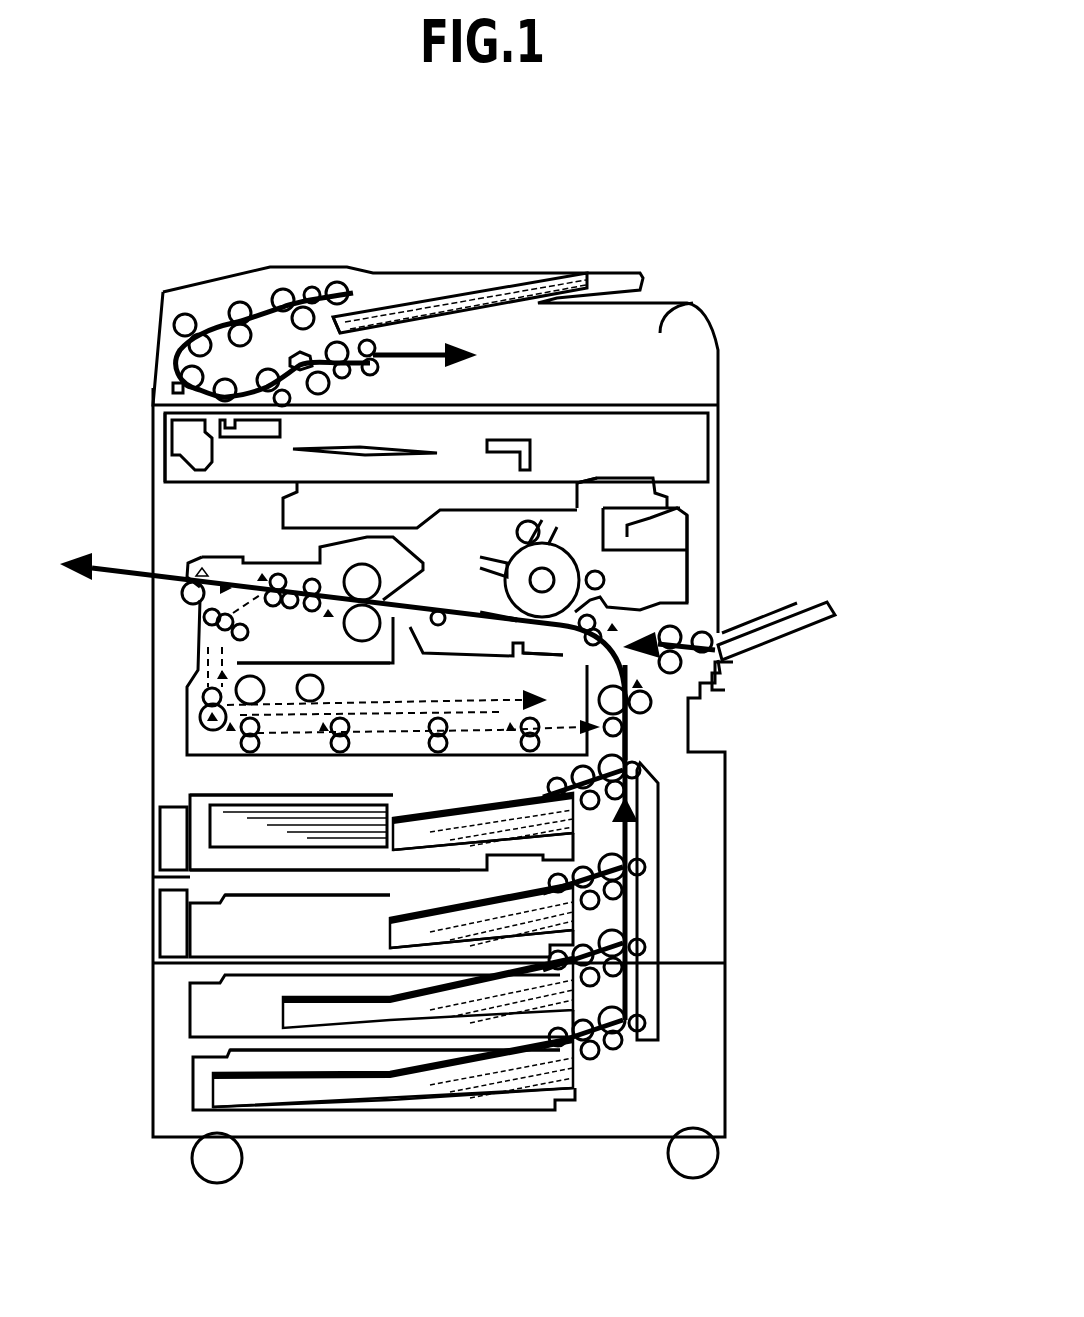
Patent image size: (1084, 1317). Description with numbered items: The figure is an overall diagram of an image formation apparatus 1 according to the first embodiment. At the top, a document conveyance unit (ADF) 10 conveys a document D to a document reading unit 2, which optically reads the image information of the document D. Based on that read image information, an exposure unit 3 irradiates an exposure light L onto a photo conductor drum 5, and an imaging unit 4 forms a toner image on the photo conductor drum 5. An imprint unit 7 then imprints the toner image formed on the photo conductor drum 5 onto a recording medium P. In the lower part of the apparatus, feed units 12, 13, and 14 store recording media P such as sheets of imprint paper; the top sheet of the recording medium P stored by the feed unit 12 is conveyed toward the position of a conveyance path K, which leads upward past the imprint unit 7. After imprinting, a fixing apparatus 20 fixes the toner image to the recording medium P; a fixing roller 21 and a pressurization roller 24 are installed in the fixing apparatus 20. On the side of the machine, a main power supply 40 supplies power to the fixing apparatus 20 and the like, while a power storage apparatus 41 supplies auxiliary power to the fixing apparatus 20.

The image formation apparatus 1 is at (887, 530).
The document reading unit 2 is at (173, 455).
The exposure unit 3 is at (623, 493).
The imaging unit 4 is at (710, 512).
The photo conductor drum 5 is at (643, 580).
The imprint unit 7 is at (548, 665).
The document conveyance unit 10 is at (690, 305).
The feed unit 12 is at (588, 848).
The feed unit 13 is at (590, 921).
The feed unit 14 is at (603, 1068).
The fixing apparatus 20 is at (355, 668).
The fixing roller 21 is at (320, 557).
The pressurization roller 24 is at (346, 628).
The main power supply 40 is at (167, 925).
The power storage apparatus 41 is at (167, 840).
The document D is at (573, 270).
The exposure light L is at (613, 478).
The conveyance path K is at (630, 743).
The recording medium P is at (442, 802).